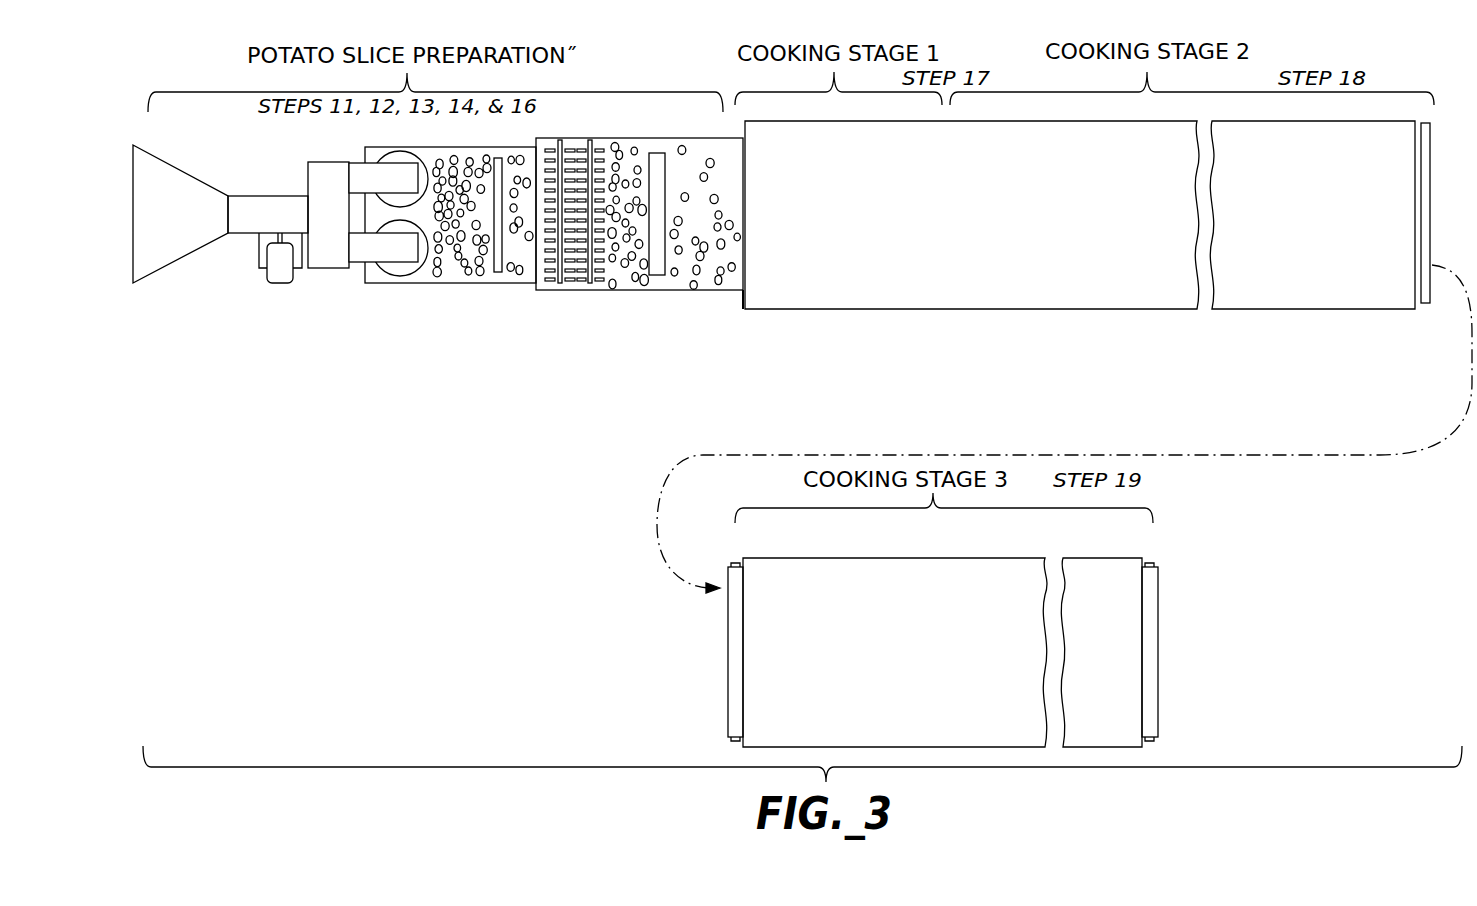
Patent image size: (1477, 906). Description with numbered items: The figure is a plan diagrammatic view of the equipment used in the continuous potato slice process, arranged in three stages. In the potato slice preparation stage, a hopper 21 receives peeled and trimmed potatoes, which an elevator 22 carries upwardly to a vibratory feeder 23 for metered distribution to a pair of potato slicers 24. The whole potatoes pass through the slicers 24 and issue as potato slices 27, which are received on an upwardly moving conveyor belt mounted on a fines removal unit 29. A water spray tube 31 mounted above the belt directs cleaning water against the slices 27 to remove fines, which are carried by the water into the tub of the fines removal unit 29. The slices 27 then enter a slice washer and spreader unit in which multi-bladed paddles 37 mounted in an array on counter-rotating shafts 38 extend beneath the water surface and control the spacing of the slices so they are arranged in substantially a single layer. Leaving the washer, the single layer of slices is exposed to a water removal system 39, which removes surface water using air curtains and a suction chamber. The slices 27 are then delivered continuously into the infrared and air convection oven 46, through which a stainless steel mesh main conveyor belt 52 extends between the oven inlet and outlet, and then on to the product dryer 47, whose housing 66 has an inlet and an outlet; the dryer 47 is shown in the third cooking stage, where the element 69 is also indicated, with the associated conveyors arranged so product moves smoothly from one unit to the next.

The hopper 21 is at (172, 262).
The elevator 22 is at (276, 196).
The vibratory feeder 23 is at (331, 268).
The potato slicers 24 is at (400, 162).
The potato slices 27 is at (645, 138).
The fines removal unit 29 is at (522, 285).
The water spray tube 31 is at (496, 272).
The multi-bladed paddles 37 is at (578, 284).
The counter-rotating shafts 38 is at (590, 147).
The water removal system 39 is at (656, 277).
The infrared and air convection oven 46 is at (1022, 309).
The product dryer 47 is at (1122, 558).
The main conveyor belt 52 is at (743, 282).
The housing 66 is at (888, 642).
The outlet end plate 69 is at (1156, 693).